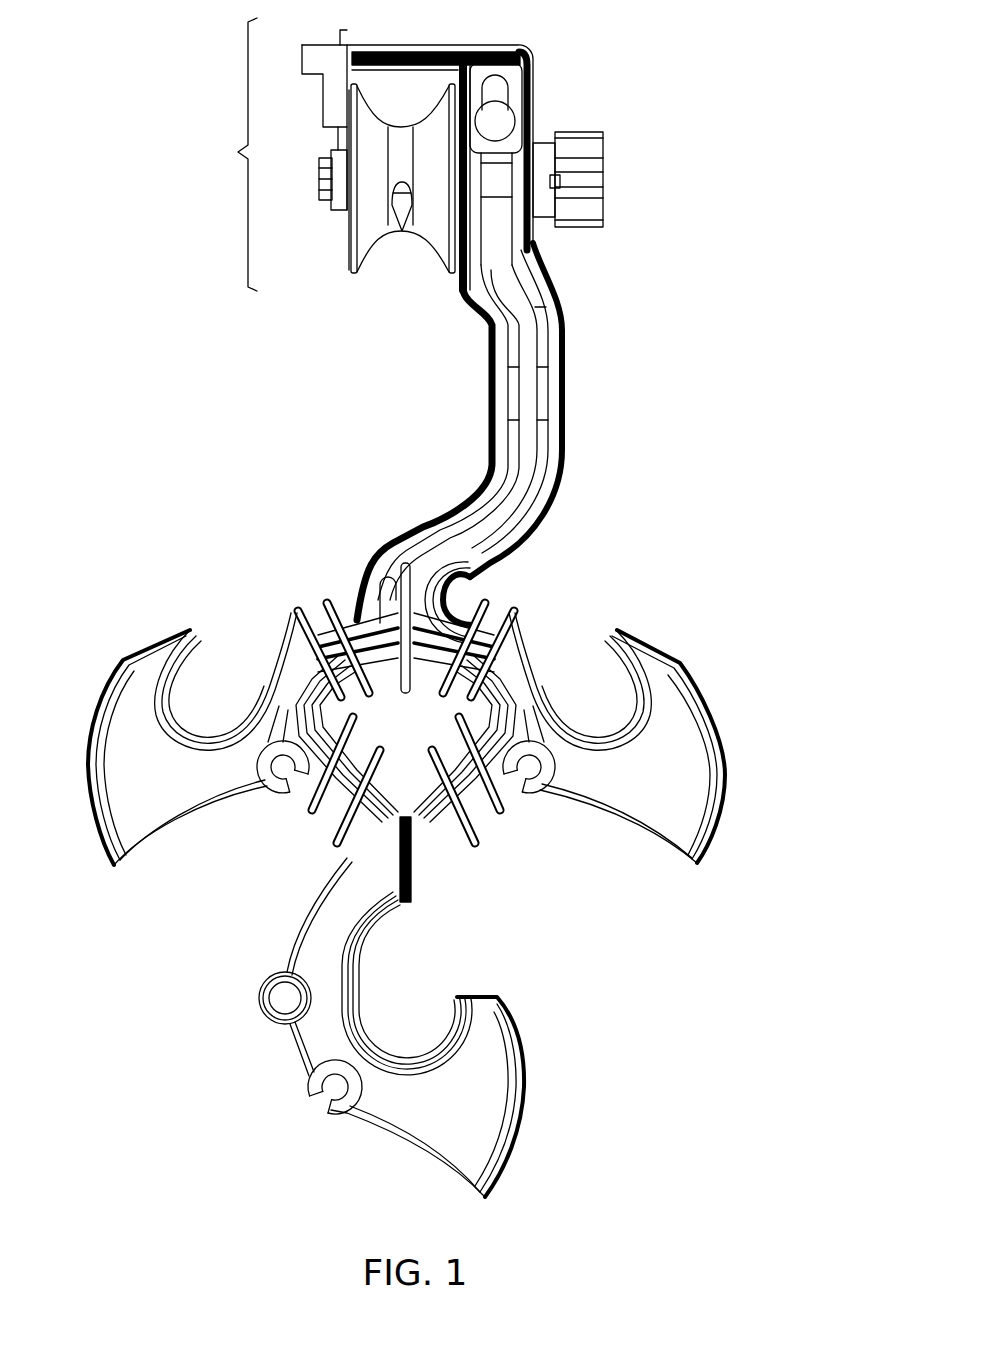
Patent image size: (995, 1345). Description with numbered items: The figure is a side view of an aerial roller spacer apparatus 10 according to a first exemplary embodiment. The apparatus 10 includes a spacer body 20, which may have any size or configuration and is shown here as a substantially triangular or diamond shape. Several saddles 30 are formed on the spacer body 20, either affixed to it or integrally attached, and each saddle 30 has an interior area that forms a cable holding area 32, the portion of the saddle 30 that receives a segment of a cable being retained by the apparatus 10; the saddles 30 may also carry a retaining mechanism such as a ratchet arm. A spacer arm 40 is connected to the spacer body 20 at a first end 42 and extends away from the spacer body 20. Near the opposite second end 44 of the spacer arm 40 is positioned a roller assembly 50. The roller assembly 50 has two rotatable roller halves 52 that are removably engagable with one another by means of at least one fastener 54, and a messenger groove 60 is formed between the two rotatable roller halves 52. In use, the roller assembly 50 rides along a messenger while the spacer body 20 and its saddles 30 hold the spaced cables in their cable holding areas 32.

The aerial roller spacer apparatus 10 is at (687, 32).
The spacer body 20 is at (330, 810).
The saddle 30 is at (132, 667).
The cable holding area 32 is at (212, 707).
The spacer arm 40 is at (553, 403).
The first end 42 is at (472, 580).
The second end 44 is at (528, 237).
The roller assembly 50 is at (236, 150).
The rotatable roller halves 52 is at (375, 232).
The fastener 54 is at (340, 195).
The messenger groove 60 is at (403, 185).